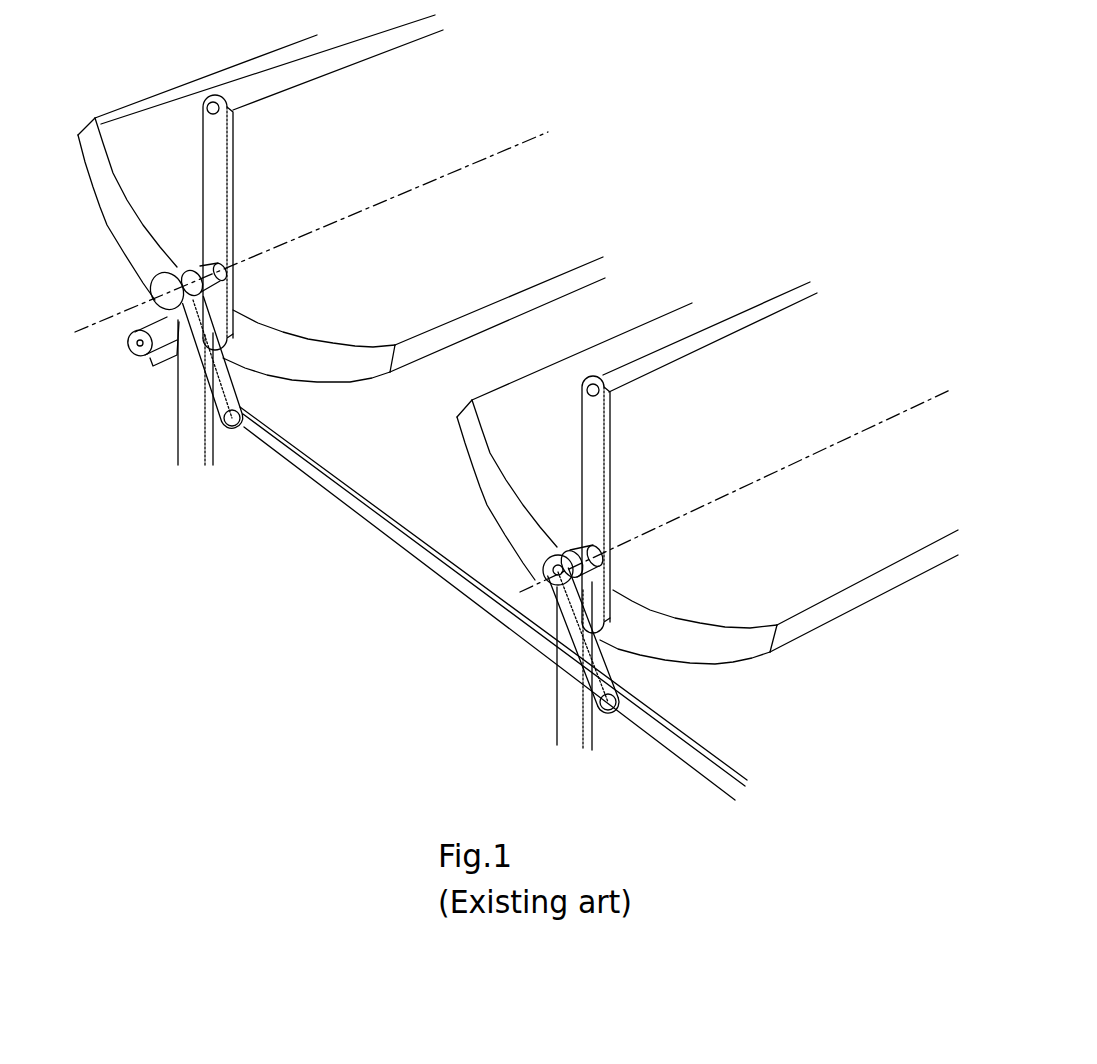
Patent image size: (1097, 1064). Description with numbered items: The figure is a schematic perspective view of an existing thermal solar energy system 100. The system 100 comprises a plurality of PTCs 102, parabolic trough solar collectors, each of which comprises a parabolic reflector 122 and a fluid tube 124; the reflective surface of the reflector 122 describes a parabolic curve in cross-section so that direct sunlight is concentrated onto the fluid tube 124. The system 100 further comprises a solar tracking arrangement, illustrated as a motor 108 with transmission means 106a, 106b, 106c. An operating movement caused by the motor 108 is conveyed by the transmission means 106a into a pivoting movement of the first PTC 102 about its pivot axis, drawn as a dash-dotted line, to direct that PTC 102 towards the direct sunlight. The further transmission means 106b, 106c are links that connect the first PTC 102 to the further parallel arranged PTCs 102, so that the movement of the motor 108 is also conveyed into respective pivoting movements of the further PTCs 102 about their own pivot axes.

The thermal solar energy system 100 is at (197, 638).
The PTC 102 is at (245, 62).
The transmission means 106a is at (153, 279).
The further transmission means 106b is at (233, 377).
The further transmission means 106c is at (383, 535).
The motor 108 is at (153, 370).
The parabolic reflector 122 is at (502, 273).
The fluid tube 124 is at (350, 58).